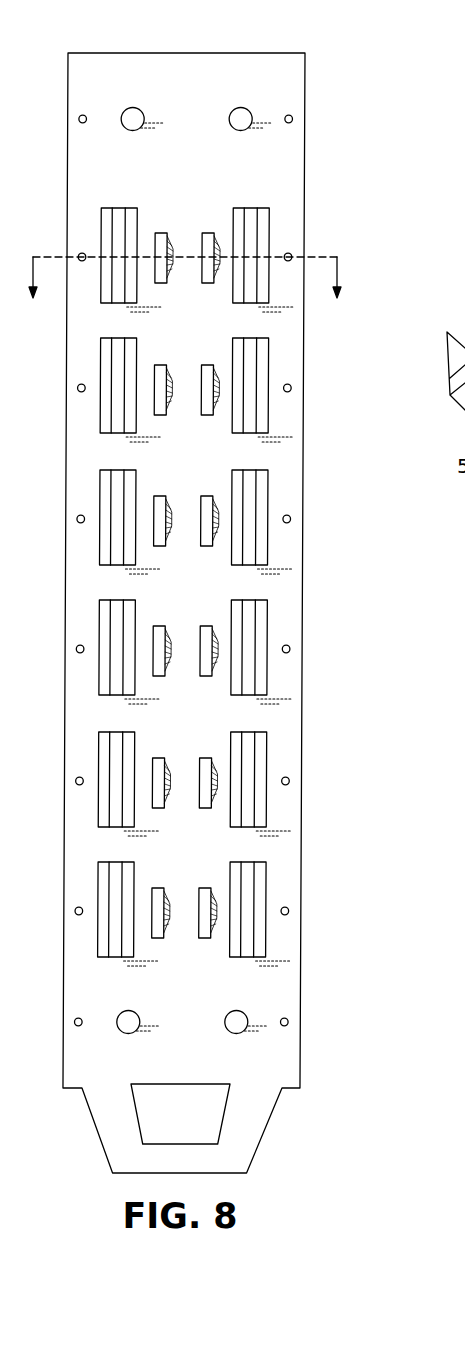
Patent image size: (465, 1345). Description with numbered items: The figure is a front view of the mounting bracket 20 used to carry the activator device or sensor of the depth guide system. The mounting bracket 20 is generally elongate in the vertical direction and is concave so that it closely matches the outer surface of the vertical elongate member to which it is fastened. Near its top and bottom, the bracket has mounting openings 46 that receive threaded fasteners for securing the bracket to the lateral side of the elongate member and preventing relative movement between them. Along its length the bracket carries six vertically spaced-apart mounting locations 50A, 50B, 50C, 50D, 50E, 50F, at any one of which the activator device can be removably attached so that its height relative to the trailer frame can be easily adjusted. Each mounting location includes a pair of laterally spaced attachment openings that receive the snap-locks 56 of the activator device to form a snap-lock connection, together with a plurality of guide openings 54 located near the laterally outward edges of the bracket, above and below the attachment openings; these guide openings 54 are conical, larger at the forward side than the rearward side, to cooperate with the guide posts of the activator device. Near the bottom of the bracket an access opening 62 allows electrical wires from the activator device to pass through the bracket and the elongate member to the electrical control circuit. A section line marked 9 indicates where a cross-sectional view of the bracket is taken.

The mounting bracket 20 is at (396, 153).
The mounting openings 46 is at (133, 107).
The guide openings 54 is at (79, 119).
The snap-locks 56 is at (118, 209).
The mounting location 50A is at (229, 253).
The mounting location 50B is at (363, 367).
The mounting location 50C is at (363, 498).
The mounting location 50D is at (363, 628).
The mounting location 50E is at (361, 760).
The mounting location 50F is at (361, 890).
The access opening 62 is at (153, 1113).
The section line 9- 9 is at (185, 297).